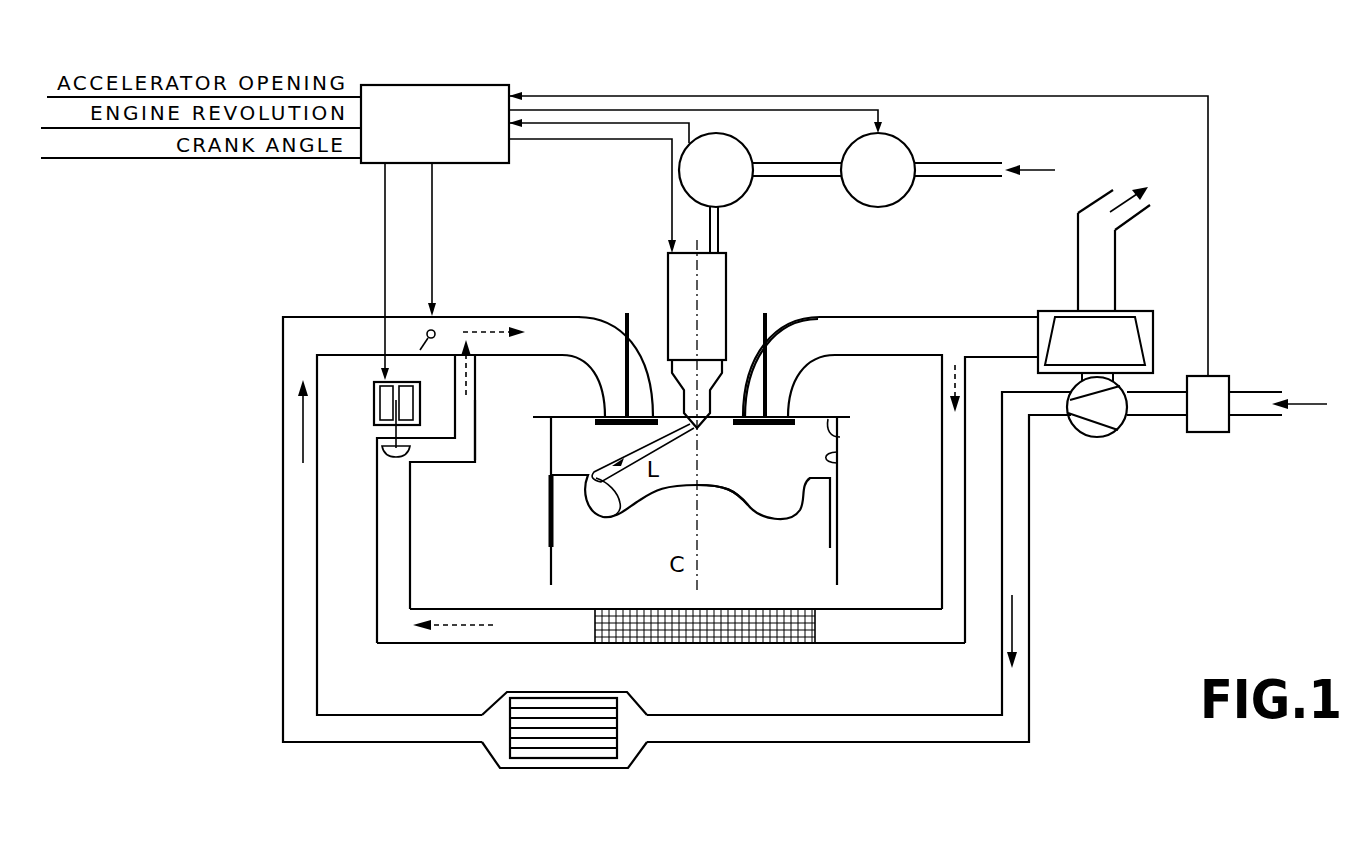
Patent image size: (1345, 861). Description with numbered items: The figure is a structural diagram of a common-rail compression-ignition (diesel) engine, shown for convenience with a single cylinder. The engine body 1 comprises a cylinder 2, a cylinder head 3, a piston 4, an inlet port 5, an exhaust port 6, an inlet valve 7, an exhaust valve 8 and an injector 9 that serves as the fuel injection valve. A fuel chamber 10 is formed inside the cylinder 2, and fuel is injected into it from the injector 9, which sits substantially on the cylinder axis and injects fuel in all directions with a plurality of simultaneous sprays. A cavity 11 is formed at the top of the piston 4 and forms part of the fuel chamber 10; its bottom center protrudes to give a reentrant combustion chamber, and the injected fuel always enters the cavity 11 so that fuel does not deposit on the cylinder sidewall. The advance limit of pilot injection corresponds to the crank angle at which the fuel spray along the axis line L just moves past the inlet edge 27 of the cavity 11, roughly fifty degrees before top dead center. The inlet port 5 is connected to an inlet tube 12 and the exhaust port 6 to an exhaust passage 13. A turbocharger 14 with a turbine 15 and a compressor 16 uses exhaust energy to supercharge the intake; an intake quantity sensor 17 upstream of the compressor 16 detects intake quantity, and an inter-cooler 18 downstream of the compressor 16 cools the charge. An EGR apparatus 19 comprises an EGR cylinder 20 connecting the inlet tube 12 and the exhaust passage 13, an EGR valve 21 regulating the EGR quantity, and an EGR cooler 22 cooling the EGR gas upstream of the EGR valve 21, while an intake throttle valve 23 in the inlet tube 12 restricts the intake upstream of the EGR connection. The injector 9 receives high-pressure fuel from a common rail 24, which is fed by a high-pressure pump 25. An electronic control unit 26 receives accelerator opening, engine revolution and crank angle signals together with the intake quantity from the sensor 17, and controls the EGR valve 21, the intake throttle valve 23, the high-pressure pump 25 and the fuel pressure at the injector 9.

The engine body 1 is at (520, 518).
The cylinder 2 is at (837, 460).
The cylinder head 3 is at (840, 437).
The piston 4 is at (790, 527).
The inlet port 5 is at (600, 363).
The exhaust port 6 is at (783, 373).
The inlet valve 7 is at (624, 325).
The exhaust valve 8 is at (768, 327).
The injector 9 is at (712, 281).
The fuel chamber 10 is at (572, 452).
The cavity 11 is at (738, 500).
The inlet tube 12 is at (283, 567).
The exhaust port 13 is at (988, 317).
The turbocharger 14 is at (1050, 287).
The turbine 15 is at (1105, 335).
The compressor 16 is at (1108, 410).
The intake quantity sensor 17 is at (1208, 416).
The inter-cooler 18 is at (556, 722).
The EGR apparatus 19 is at (352, 390).
The EGR cylinder 20 is at (888, 645).
The EGR valve 21 is at (378, 382).
The EGR cooler 22 is at (718, 645).
The intake throttle valve 23 is at (434, 330).
The common rail 24 is at (745, 196).
The high-pressure pump 25 is at (906, 192).
The electronic control unit (ECU) 26 is at (421, 85).
The inlet edge 27 is at (620, 512).